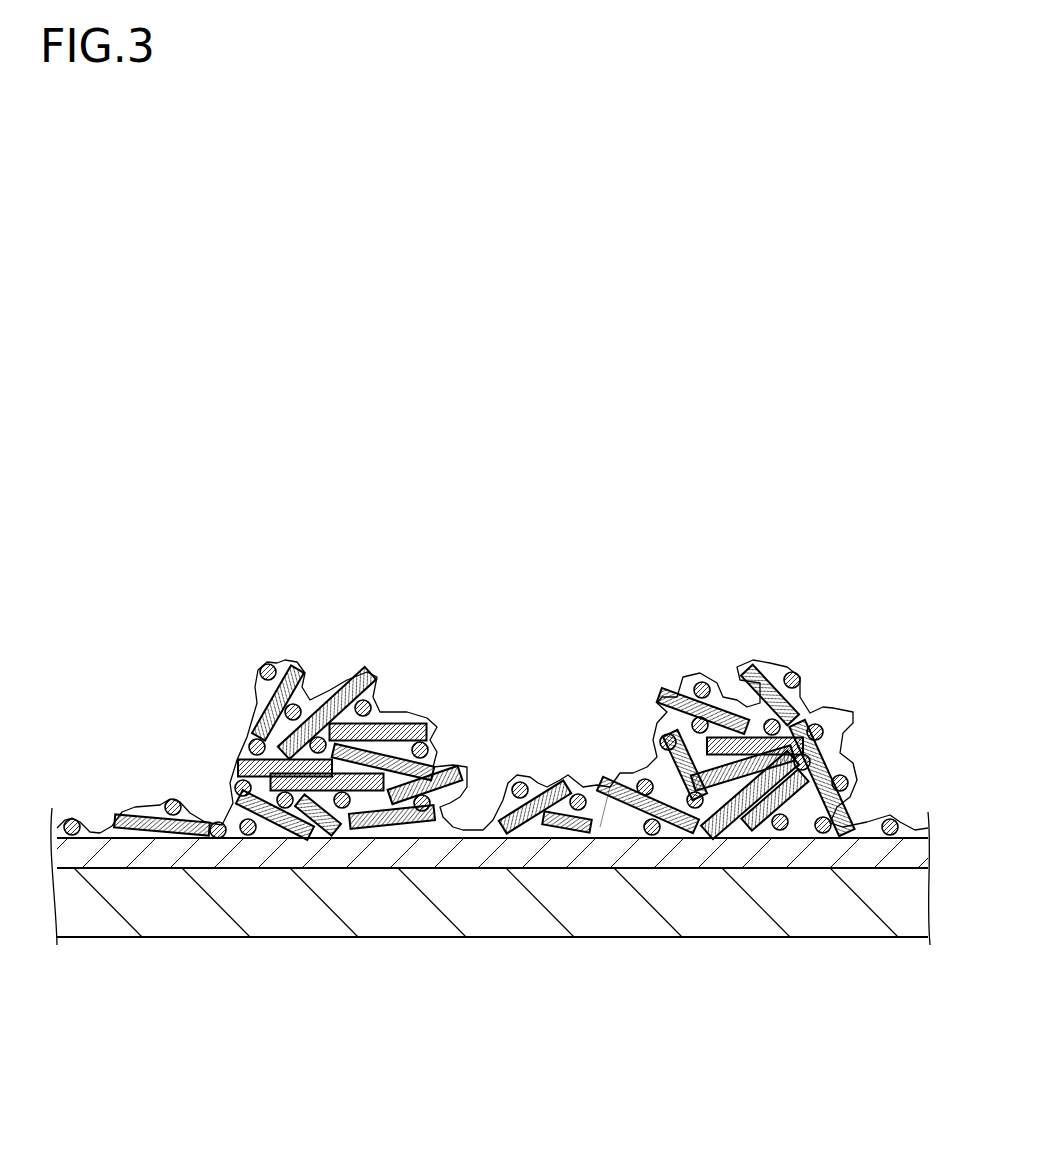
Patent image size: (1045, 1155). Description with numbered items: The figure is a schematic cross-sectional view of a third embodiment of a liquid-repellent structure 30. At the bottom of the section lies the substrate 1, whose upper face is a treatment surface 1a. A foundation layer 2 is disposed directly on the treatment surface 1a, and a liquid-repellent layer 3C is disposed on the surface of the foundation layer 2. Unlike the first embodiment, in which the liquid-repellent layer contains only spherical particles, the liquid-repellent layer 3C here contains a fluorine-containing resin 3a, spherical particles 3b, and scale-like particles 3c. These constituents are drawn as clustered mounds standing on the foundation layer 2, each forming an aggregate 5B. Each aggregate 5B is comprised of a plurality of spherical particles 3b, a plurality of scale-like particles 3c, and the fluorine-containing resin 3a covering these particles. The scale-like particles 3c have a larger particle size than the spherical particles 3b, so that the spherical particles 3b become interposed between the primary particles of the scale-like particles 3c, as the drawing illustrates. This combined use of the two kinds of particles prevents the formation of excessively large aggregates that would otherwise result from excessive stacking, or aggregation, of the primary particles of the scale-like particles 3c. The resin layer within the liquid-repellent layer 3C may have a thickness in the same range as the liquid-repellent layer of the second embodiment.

The substrate 1 is at (757, 920).
The treatment surface 1a is at (486, 862).
The foundation layer 2 is at (103, 852).
The fluorine-containing resin 3a is at (317, 700).
The spherical particles 3b is at (292, 706).
The scale-like particles 3c is at (412, 720).
The liquid-repellent layer 3C is at (877, 718).
The aggregate 5B is at (258, 596).
The liquid-repellent structure 30 is at (828, 550).